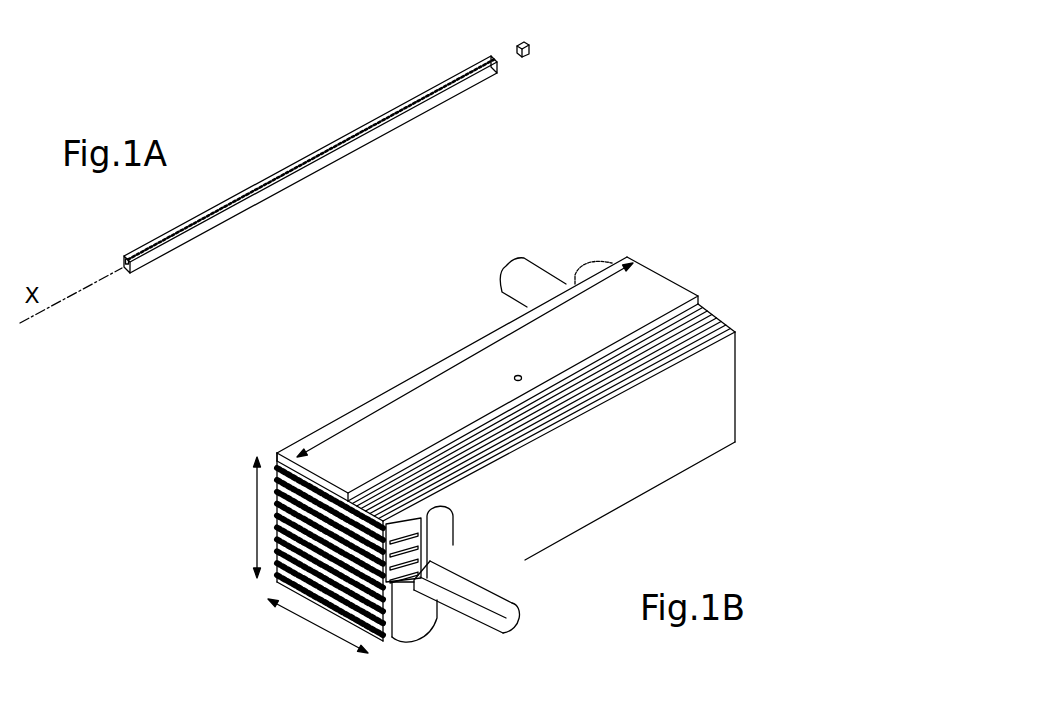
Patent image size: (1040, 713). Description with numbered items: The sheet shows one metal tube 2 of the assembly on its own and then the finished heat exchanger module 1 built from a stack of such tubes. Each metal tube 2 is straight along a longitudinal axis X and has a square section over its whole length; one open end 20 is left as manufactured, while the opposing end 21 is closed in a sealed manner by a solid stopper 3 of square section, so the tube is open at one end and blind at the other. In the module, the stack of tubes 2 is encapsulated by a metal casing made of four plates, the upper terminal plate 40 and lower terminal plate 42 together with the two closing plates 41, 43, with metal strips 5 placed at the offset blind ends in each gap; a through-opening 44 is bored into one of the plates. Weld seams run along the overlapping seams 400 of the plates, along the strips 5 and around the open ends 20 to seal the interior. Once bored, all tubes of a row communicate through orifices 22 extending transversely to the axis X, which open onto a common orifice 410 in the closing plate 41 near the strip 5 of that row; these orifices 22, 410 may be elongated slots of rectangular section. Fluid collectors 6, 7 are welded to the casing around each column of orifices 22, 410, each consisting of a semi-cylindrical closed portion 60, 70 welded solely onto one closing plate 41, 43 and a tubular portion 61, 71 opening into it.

In FIG. 1B, the heat exchanger module 1 is at (712, 192).
In FIG. 1A, the metal tube 2 is at (310, 169).
In FIG. 1B, the metal tube 2 is at (560, 388).
In FIG. 1A, the solid stopper 3 is at (523, 42).
In FIG. 1B, the metal strip 5 is at (277, 569).
In FIG. 1B, the fluid collector 6 is at (405, 628).
In FIG. 1B, the fluid collector 7 is at (557, 238).
In FIG. 1A, the open end 20 is at (128, 274).
In FIG. 1B, the open end 20 is at (277, 540).
In FIG. 1A, the closed end 21 is at (470, 66).
In FIG. 1B, the orifice 22 is at (702, 306).
In FIG. 1B, the upper terminal plate 40 is at (494, 351).
In FIG. 1B, the closing plate 41 is at (682, 450).
In FIG. 1B, the lower terminal plate 42 is at (298, 592).
In FIG. 1B, the closing plate 43 is at (446, 350).
In FIG. 1B, the through-opening 44 is at (521, 376).
In FIG. 1B, the semi-cylindrical closed portion 60 is at (440, 498).
In FIG. 1B, the tubular portion 61 is at (522, 615).
In FIG. 1B, the semi-cylindrical closed portion 70 is at (598, 262).
In FIG. 1B, the tubular portion 71 is at (524, 262).
In FIG. 1B, the overlapping seam 400 is at (642, 262).
In FIG. 1B, the orifice 410 is at (445, 519).